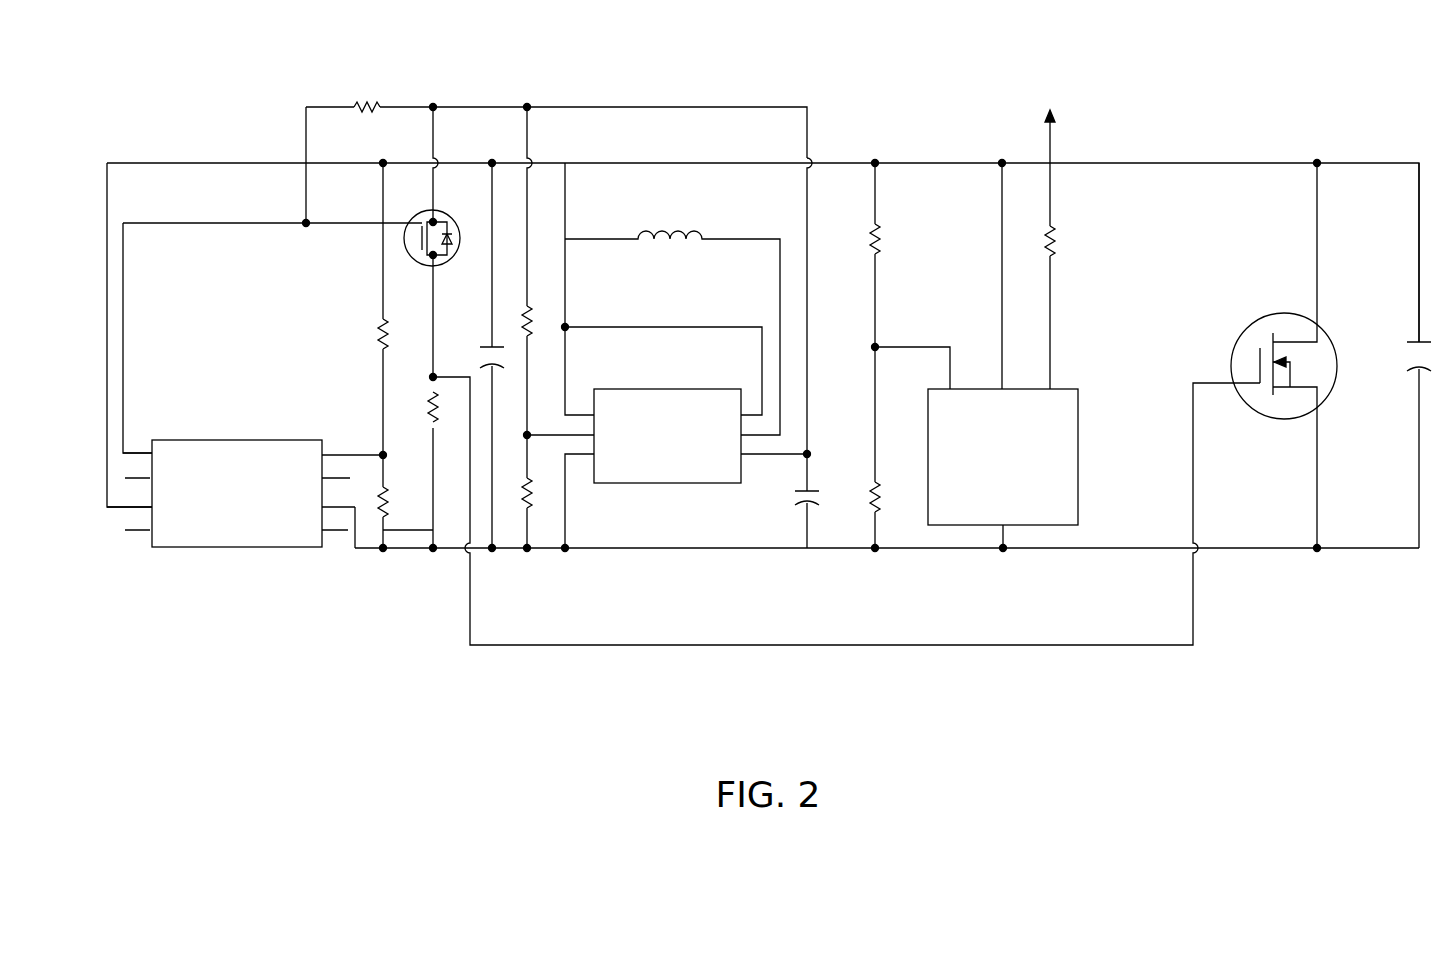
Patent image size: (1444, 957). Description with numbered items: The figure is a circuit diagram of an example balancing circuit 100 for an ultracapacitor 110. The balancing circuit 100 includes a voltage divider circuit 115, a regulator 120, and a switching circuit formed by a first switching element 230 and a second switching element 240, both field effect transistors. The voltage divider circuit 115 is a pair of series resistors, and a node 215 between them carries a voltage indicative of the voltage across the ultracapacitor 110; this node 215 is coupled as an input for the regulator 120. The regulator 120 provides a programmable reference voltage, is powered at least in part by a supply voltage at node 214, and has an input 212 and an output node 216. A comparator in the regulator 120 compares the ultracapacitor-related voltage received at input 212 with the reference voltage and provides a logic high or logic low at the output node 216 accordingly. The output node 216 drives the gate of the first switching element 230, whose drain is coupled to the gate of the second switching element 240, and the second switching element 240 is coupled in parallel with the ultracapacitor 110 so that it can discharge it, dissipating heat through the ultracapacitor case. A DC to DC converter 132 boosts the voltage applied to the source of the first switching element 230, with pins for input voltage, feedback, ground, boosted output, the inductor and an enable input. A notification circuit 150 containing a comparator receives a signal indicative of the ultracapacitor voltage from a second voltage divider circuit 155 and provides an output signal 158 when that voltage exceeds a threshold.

The balancing circuit 100 is at (1184, 104).
The ultracapacitor 110 is at (1413, 341).
The voltage divider circuit 115 is at (356, 337).
The regulator 120 is at (221, 518).
The DC to DC converter 132 is at (652, 473).
The notification circuit 150 is at (987, 496).
The voltage divider circuit 155 is at (916, 226).
The output signal 158 is at (1052, 142).
The input 212 is at (340, 455).
The node 214 is at (112, 510).
The node 215 is at (434, 376).
The output node 216 is at (134, 452).
The first switching element 230 is at (446, 221).
The second switching element 240 is at (1238, 345).